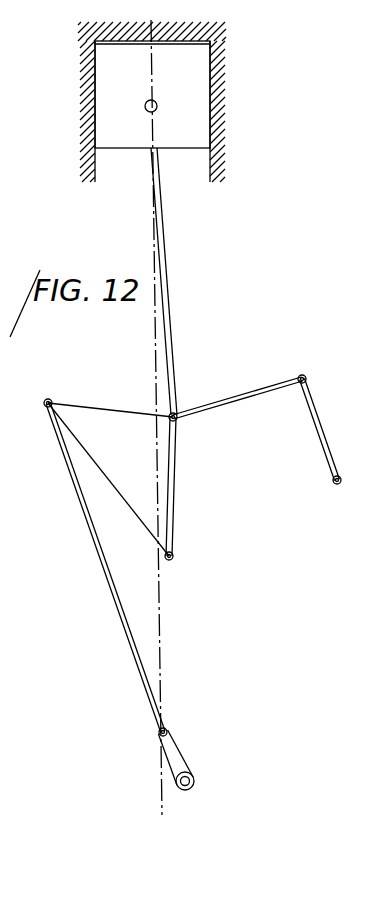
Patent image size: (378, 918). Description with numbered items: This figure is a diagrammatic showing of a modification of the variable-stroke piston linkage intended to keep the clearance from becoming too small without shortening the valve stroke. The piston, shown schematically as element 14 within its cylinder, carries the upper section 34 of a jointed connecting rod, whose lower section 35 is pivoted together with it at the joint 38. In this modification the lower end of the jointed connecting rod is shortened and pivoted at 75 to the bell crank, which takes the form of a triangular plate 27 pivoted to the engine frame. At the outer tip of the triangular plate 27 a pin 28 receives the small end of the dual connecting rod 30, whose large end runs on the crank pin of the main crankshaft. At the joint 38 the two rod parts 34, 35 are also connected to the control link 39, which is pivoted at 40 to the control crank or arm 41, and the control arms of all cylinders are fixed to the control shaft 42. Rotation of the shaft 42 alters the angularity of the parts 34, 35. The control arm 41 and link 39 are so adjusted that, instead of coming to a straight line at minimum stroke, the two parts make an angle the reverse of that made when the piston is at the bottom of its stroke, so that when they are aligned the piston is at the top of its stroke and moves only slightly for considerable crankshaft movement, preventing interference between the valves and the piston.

The piston 14 is at (188, 137).
The upper section of jointed connecting rod 34 is at (172, 307).
The triangular plates 27 is at (105, 410).
The pin 28 is at (48, 398).
The pivot 38 is at (176, 412).
The control link 39 is at (248, 398).
The pivot 40 is at (308, 378).
The control crank or arm 41 is at (312, 418).
The control shaft 42 is at (330, 483).
The lower section of jointed connecting rod 35 is at (176, 480).
The pivot 75 is at (176, 557).
The dual connecting rod 30 is at (87, 538).